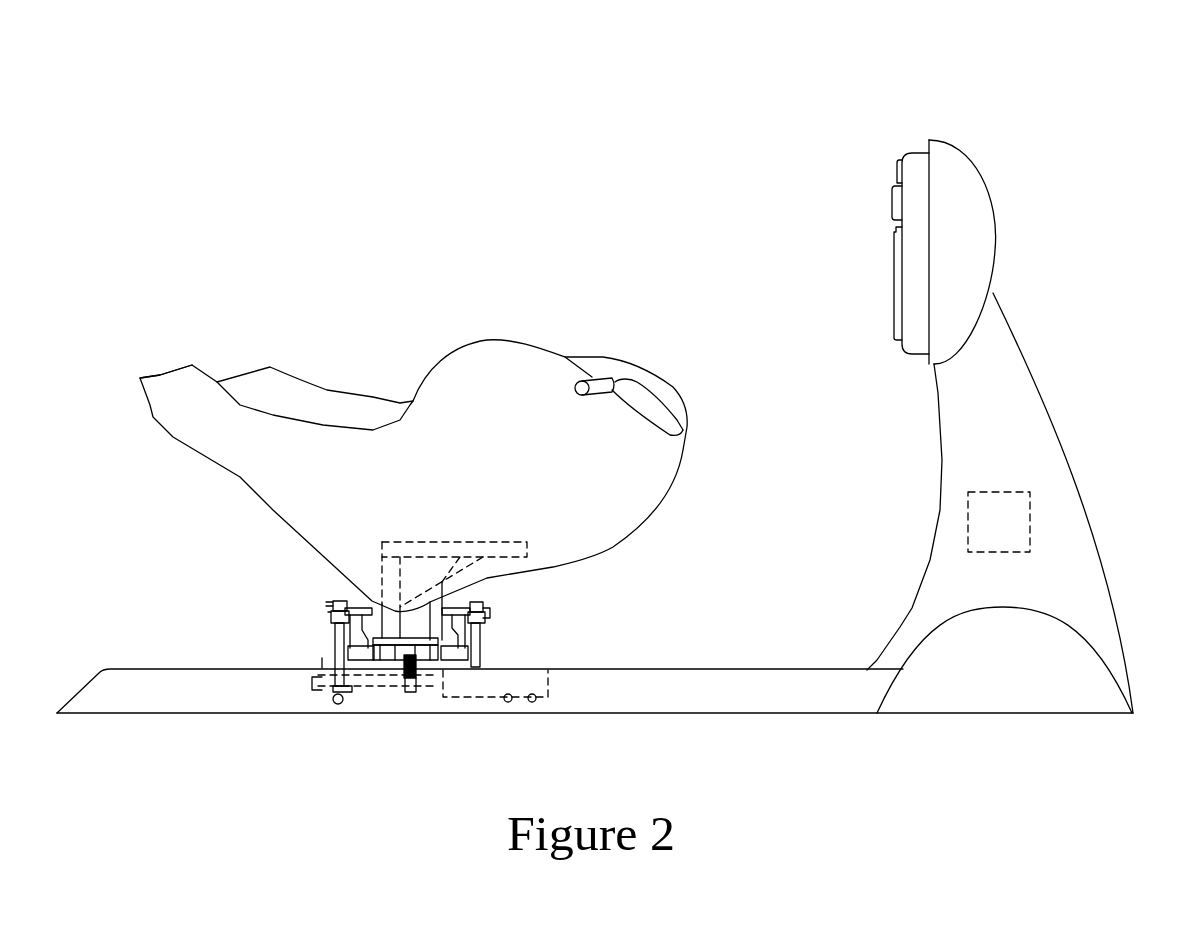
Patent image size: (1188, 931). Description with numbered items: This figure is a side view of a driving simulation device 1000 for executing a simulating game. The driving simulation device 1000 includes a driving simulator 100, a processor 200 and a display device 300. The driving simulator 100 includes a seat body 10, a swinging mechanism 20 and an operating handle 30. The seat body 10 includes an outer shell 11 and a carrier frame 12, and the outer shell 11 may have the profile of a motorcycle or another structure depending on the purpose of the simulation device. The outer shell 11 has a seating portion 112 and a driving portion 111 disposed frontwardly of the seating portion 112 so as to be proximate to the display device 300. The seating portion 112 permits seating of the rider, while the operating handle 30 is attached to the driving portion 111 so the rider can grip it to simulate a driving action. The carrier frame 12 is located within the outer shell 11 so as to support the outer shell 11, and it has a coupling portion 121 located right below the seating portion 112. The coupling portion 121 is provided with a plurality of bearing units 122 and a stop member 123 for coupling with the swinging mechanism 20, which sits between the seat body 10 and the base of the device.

The driving simulation device 1000 is at (1003, 66).
The driving simulator 100 is at (436, 304).
The seat body 10 is at (104, 376).
The outer shell 11 is at (177, 385).
The seating portion 112 is at (333, 402).
The driving portion 111 is at (612, 370).
The operating handle 30 is at (683, 432).
The carrier frame 12 is at (529, 548).
The coupling portion 121 is at (452, 640).
The bearing units 122 is at (421, 660).
The stop member 123 is at (390, 670).
The swinging mechanism 20 is at (280, 640).
The processor 200 is at (1032, 515).
The display device 300 is at (980, 233).